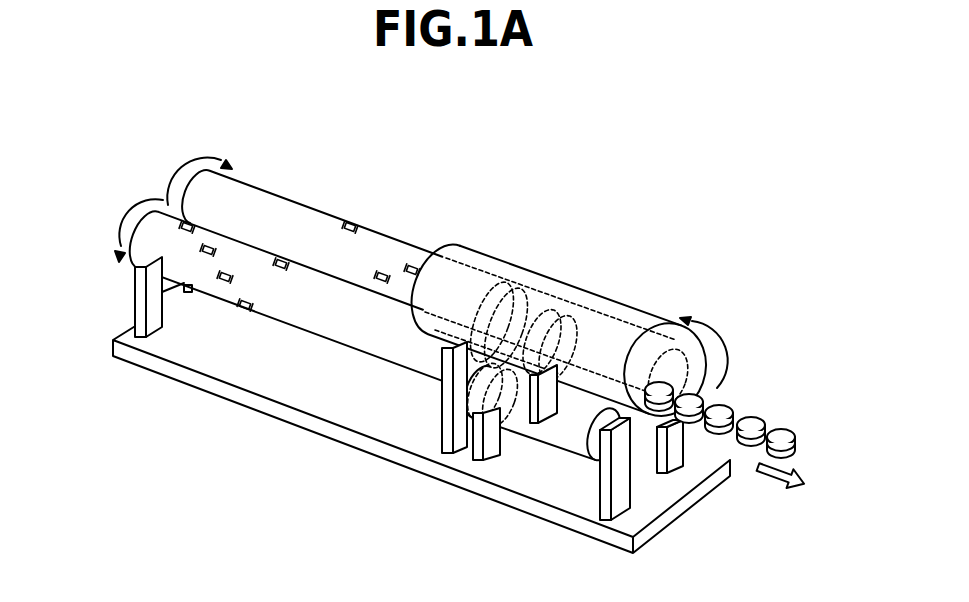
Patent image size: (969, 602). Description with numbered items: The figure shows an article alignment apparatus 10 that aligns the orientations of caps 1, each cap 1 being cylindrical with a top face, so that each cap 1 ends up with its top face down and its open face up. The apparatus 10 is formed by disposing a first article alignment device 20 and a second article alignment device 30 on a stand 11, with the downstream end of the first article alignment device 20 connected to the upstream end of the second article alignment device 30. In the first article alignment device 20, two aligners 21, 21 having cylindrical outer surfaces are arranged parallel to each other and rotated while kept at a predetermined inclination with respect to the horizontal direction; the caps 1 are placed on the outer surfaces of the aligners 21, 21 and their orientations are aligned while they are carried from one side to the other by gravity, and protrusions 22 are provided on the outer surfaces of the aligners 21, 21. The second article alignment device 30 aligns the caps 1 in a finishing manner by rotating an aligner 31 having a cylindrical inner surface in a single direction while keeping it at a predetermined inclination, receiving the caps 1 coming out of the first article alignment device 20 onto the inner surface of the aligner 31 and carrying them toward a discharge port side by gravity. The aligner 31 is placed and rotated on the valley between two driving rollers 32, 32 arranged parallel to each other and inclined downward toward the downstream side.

The cap 1 is at (780, 416).
The article alignment apparatus 10 is at (518, 214).
The stand 11 is at (265, 408).
The first article alignment device 20 is at (291, 178).
The aligner 21 is at (327, 220).
The protrusion 22 is at (358, 224).
The second article alignment device 30 is at (604, 290).
The aligner 31 is at (641, 311).
The driving roller 32 is at (560, 437).